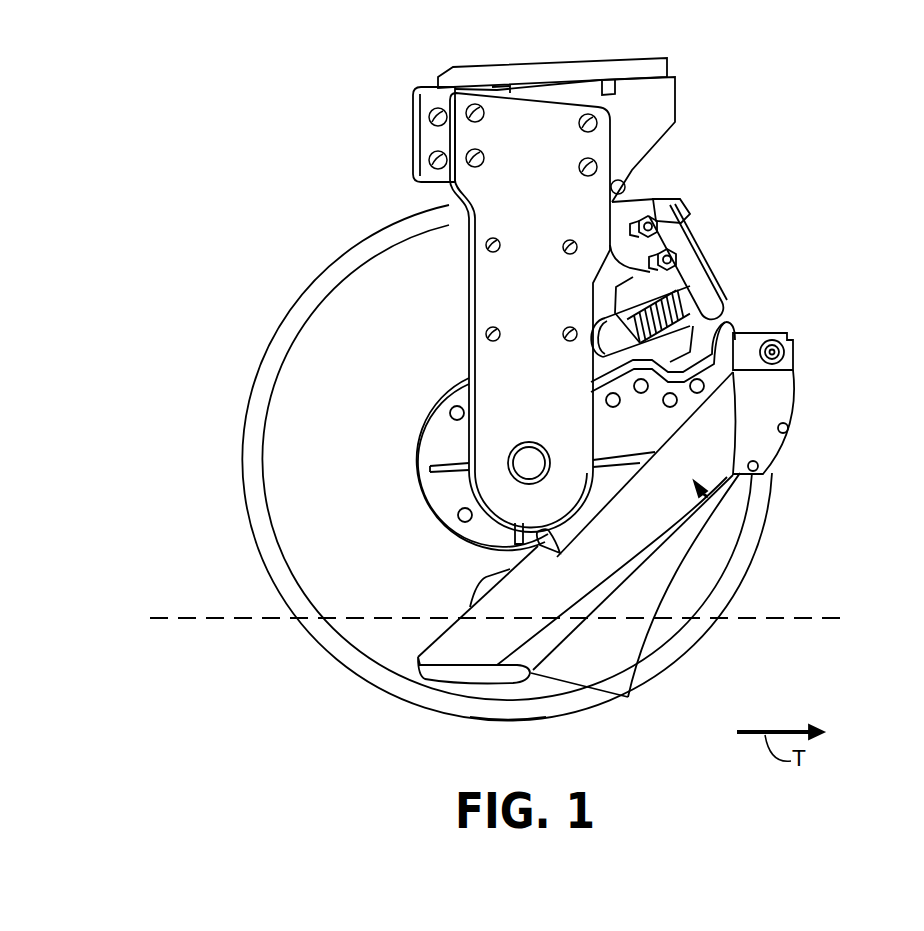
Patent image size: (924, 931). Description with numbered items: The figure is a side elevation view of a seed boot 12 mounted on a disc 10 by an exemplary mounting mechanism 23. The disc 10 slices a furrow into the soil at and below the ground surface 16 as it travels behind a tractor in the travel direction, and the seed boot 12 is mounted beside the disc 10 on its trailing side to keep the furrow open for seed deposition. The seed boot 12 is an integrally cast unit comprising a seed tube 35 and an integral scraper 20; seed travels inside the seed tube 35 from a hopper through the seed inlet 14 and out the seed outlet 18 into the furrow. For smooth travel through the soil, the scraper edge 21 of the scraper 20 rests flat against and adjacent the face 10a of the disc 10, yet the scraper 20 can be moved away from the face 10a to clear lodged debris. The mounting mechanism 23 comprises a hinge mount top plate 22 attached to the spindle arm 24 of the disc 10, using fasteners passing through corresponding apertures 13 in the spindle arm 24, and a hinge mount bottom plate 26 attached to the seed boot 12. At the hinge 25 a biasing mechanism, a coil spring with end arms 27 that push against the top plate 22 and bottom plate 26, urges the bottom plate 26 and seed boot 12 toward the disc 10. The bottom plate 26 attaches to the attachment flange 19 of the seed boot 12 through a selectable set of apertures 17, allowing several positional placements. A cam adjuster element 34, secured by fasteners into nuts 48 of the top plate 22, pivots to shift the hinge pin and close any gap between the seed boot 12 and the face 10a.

The disc 10 is at (330, 345).
The face of disc 10a is at (641, 600).
The seed boot 12 is at (705, 494).
The apertures in spindle arm 13 is at (502, 244).
The seed inlet 14 is at (782, 333).
The ground surface 16 is at (792, 617).
The apertures on attachment flange 17 is at (641, 394).
The seed outlet 18 is at (417, 668).
The attachment flange 19 is at (722, 383).
The scraper 20 is at (540, 640).
The scraper edge 21 is at (612, 693).
The hinge mount top plate 22 is at (613, 203).
The mounting mechanism 23 is at (795, 236).
The spindle arm 24 is at (497, 180).
The hinge 25 is at (703, 290).
The hinge mount bottom plate 26 is at (723, 323).
The end arms 27 is at (634, 276).
The cam adjuster element 34 is at (665, 200).
The seed tube 35 is at (663, 510).
The nuts 48 is at (677, 206).